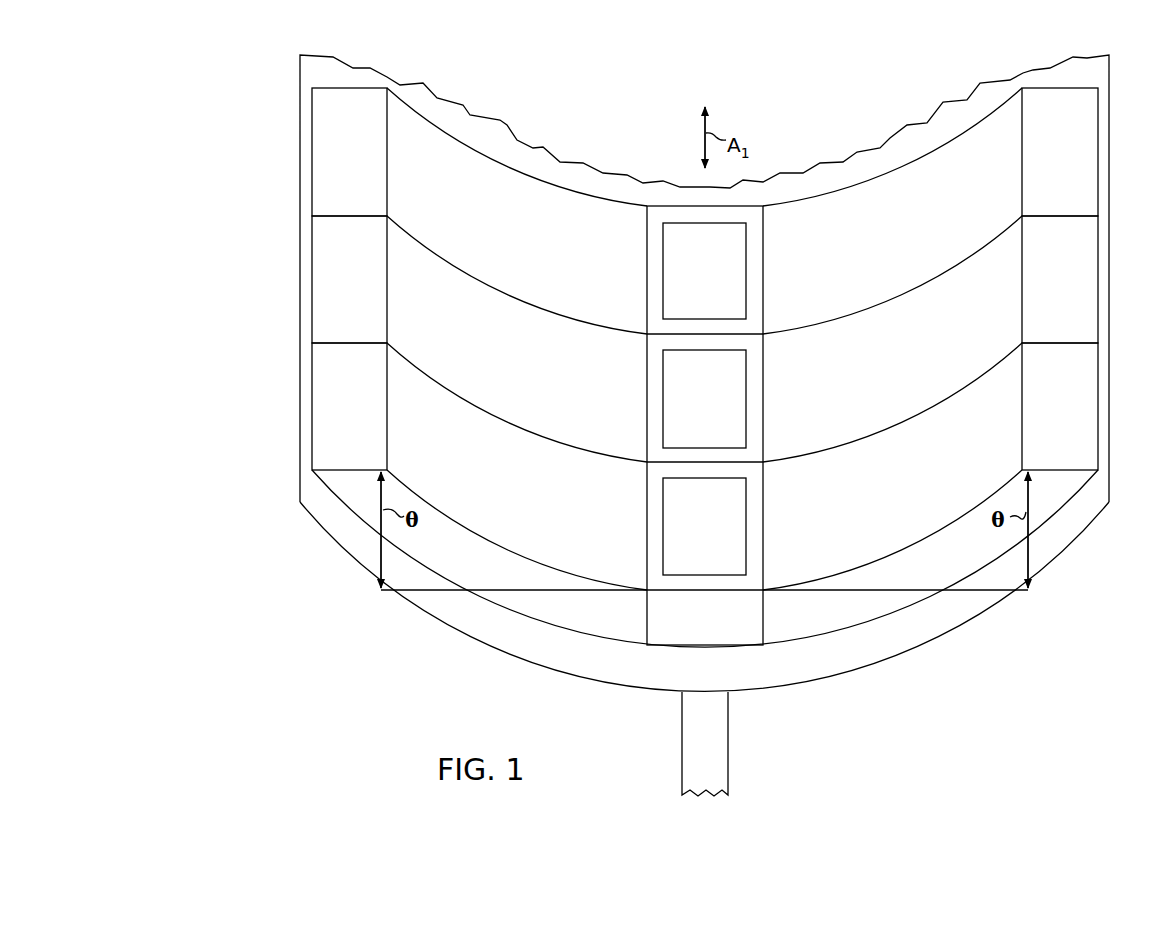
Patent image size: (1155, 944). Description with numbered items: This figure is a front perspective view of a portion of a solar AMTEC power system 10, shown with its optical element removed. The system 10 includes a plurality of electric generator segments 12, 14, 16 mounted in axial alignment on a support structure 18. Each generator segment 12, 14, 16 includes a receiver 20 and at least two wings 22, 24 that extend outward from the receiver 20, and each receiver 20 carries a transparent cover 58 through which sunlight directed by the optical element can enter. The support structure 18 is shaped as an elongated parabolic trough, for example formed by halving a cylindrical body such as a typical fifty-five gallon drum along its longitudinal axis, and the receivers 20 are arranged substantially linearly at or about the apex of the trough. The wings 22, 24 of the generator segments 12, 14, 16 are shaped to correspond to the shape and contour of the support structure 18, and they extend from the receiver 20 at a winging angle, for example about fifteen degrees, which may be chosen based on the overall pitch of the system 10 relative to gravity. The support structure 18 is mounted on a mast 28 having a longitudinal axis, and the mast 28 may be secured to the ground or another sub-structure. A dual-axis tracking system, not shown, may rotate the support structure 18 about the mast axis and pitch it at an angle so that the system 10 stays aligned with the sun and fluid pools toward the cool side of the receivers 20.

The solar AMTEC power system 10 is at (235, 138).
The electric generator segment 12 is at (1088, 152).
The electric generator segment 14 is at (1088, 287).
The electric generator segment 16 is at (1088, 429).
The support structure 18 is at (1077, 527).
The receiver 20 is at (763, 290).
The wing 22 is at (514, 181).
The wing 24 is at (894, 181).
The mast 28 is at (722, 757).
The transparent cover 58 is at (747, 261).